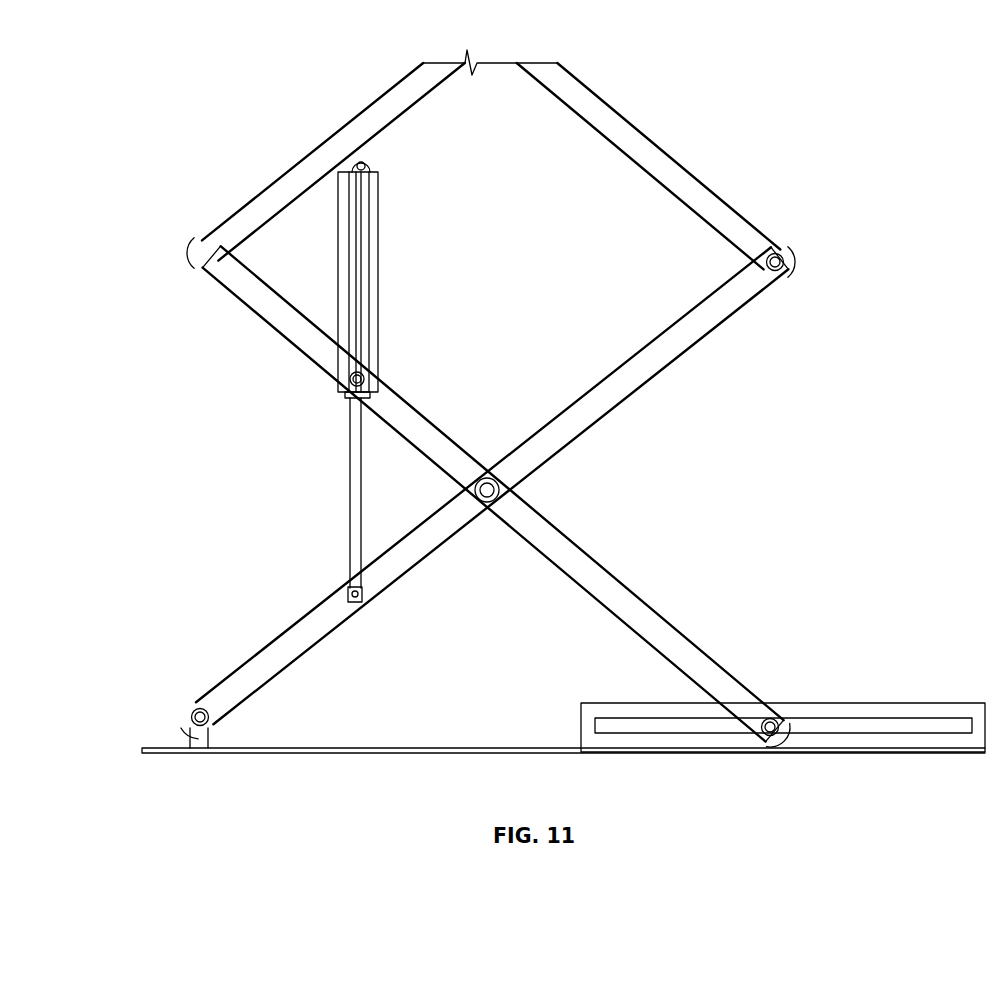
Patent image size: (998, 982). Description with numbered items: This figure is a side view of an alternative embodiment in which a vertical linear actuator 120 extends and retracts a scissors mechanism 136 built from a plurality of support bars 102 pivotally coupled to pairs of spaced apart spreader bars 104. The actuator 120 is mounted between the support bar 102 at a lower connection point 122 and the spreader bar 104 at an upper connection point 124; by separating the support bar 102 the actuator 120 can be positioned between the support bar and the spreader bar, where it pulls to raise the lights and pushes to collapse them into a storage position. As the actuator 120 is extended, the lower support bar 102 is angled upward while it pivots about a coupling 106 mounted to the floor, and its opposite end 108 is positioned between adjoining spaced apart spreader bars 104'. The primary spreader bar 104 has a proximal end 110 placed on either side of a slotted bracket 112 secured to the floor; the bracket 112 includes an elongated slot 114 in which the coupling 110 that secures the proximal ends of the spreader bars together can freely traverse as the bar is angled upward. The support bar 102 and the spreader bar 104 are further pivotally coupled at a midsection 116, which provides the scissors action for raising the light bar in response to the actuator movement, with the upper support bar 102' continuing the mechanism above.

The support bar 102' is at (326, 165).
The spreader bar 104' is at (656, 170).
The support bar 102 is at (492, 485).
The spreader bar 104 is at (493, 493).
The coupling 106 is at (193, 708).
The opposite end 108 is at (777, 252).
The proximal end coupling 110 is at (772, 718).
The slotted bracket 112 is at (876, 710).
The rail slot 114 is at (943, 730).
The midsection 116 is at (516, 498).
The vertical actuator 120 is at (382, 312).
The lower connection point 122 is at (358, 594).
The upper connection point 124 is at (376, 375).
The scissors mechanism 136 is at (295, 755).